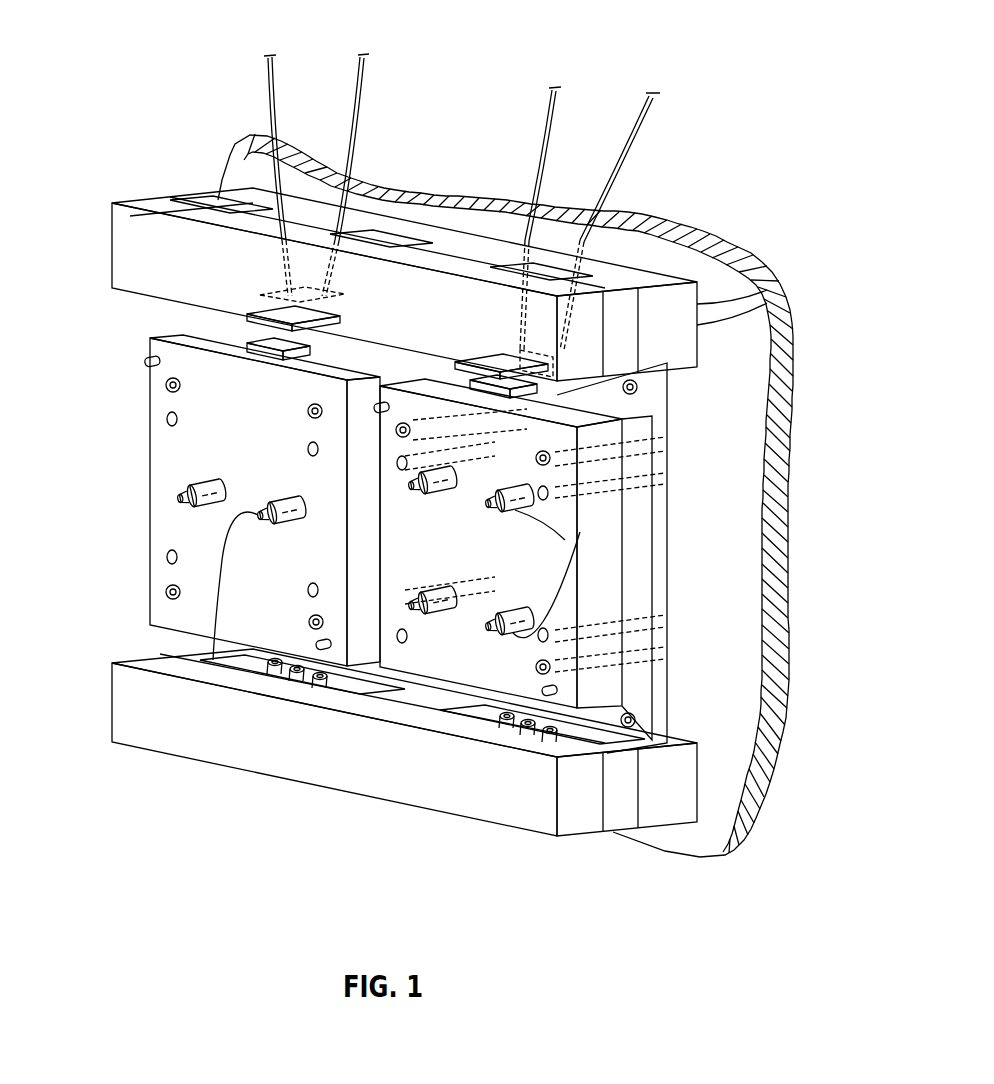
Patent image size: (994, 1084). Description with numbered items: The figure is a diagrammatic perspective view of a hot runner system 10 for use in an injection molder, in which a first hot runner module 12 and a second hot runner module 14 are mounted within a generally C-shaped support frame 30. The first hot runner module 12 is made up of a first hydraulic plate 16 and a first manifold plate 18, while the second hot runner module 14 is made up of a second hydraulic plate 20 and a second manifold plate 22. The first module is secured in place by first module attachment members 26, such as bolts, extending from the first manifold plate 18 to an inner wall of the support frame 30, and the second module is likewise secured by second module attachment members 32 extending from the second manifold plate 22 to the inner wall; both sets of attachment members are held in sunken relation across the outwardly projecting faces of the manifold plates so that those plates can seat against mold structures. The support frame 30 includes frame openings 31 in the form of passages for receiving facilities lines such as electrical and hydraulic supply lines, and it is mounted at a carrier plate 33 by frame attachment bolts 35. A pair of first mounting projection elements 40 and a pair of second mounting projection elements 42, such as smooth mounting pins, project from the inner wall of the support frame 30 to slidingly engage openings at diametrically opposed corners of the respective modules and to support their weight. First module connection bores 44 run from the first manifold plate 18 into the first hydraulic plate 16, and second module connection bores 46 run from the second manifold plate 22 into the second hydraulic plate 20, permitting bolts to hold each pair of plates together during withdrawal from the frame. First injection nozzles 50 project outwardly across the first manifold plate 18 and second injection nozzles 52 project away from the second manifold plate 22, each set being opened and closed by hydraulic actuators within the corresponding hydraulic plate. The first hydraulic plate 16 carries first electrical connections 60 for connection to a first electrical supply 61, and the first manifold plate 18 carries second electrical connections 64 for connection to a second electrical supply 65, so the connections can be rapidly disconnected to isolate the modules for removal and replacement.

The hot runner system 10 is at (84, 361).
The first hot runner module 12 is at (463, 692).
The second hot runner module 14 is at (178, 640).
The first hydraulic plate 16 is at (652, 578).
The first manifold plate 18 is at (612, 567).
The second hydraulic plate 20 is at (222, 337).
The second manifold plate 22 is at (182, 337).
The first module attachment members 26 is at (672, 432).
The support frame 30 is at (773, 270).
The frame openings 31 is at (312, 215).
The second module attachment members 32 is at (320, 404).
The carrier plate 33 is at (717, 228).
The frame attachment bolts 35 is at (645, 383).
The first mounting projection elements 40 is at (400, 385).
The second mounting projection elements 42 is at (146, 359).
The first module connection bores 44 is at (432, 478).
The second module connection bores 46 is at (165, 423).
The first injection nozzles 50 is at (510, 495).
The second injection nozzles 52 is at (175, 498).
The first electrical connections 60 is at (771, 301).
The first electrical supply 61 is at (565, 300).
The second electrical connections 64 is at (565, 382).
The second electrical supply 65 is at (488, 354).